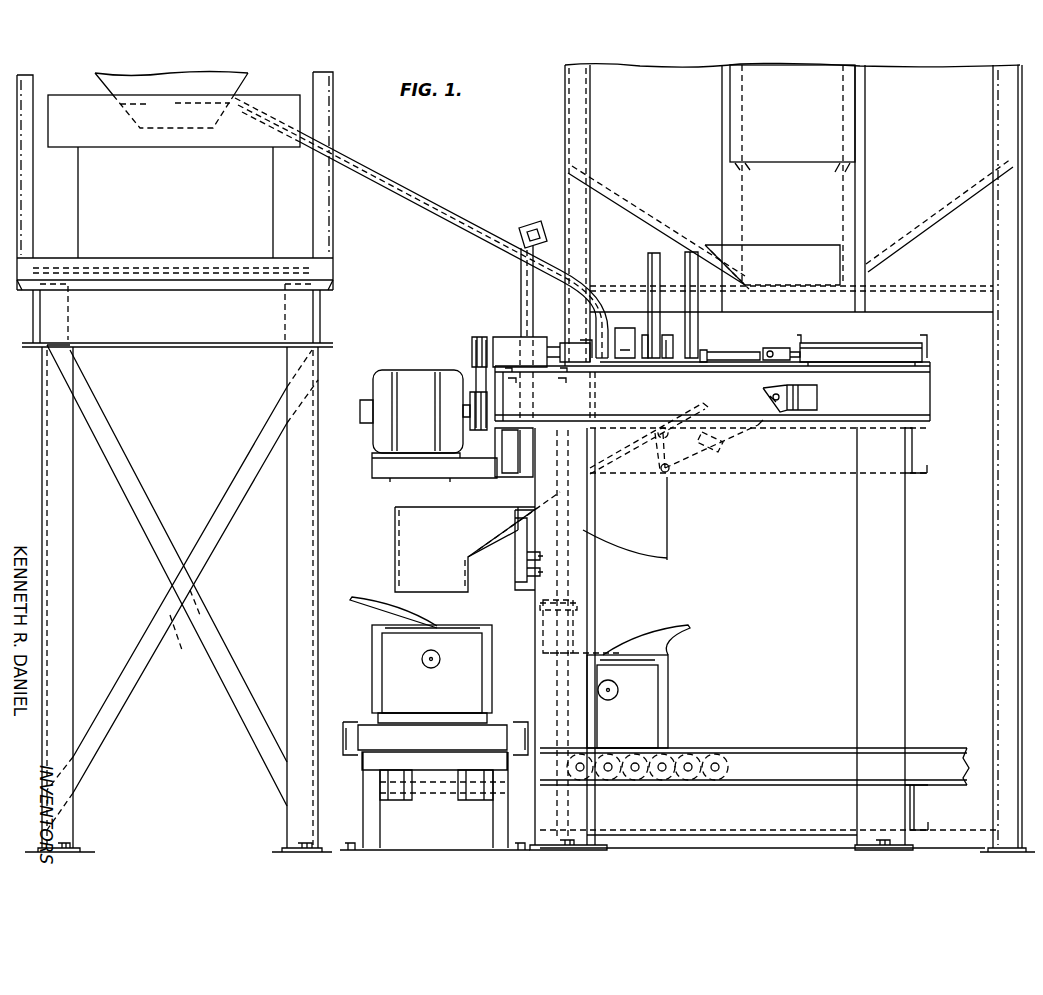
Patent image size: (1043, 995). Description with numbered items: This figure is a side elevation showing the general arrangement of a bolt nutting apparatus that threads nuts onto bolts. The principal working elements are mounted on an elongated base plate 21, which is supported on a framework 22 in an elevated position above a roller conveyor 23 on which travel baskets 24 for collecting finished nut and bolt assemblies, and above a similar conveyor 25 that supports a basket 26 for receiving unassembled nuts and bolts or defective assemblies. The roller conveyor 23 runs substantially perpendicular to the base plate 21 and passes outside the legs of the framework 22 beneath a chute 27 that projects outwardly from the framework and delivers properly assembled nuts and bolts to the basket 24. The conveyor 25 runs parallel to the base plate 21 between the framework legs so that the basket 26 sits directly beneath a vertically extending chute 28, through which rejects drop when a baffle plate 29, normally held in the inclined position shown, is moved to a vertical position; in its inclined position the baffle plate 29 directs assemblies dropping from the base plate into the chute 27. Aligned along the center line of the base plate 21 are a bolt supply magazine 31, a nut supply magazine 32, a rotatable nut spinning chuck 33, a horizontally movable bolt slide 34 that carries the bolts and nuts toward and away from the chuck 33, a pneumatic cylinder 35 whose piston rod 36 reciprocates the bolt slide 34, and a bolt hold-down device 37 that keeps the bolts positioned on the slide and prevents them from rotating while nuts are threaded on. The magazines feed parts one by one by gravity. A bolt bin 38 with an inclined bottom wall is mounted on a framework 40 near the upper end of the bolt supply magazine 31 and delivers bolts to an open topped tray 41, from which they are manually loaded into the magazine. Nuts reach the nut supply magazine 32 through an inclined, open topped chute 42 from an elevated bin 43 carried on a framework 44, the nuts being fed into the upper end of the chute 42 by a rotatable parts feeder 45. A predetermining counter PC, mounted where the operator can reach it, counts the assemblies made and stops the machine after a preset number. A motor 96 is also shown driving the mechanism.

The base plate 21 is at (863, 366).
The framework 22 is at (923, 390).
The roller conveyor 23 is at (438, 740).
The basket 24 is at (403, 680).
The conveyor 25 is at (663, 770).
The basket 26 is at (643, 698).
The chute 27 is at (415, 540).
The vertically extending chute 28 is at (655, 522).
The baffle plate 29 is at (625, 457).
The bolt supply magazine 31 is at (678, 262).
The nut supply magazine 32 is at (598, 291).
The nut spinning chuck 33 is at (575, 348).
The bolt slide 34 is at (730, 352).
The pneumatic cylinder 35 is at (885, 345).
The piston rod 36 is at (775, 350).
The bolt hold-down device 37 is at (626, 330).
The bolt bin 38 is at (927, 151).
The framework 40 is at (1007, 500).
The open topped tray 41 is at (779, 255).
The inclined chute 42 is at (440, 208).
The elevated bin 43 is at (190, 93).
The framework 44 is at (290, 363).
The rotatable parts feeder 45 is at (240, 132).
The motor 96 is at (410, 372).
The predetermining counter PC is at (521, 228).